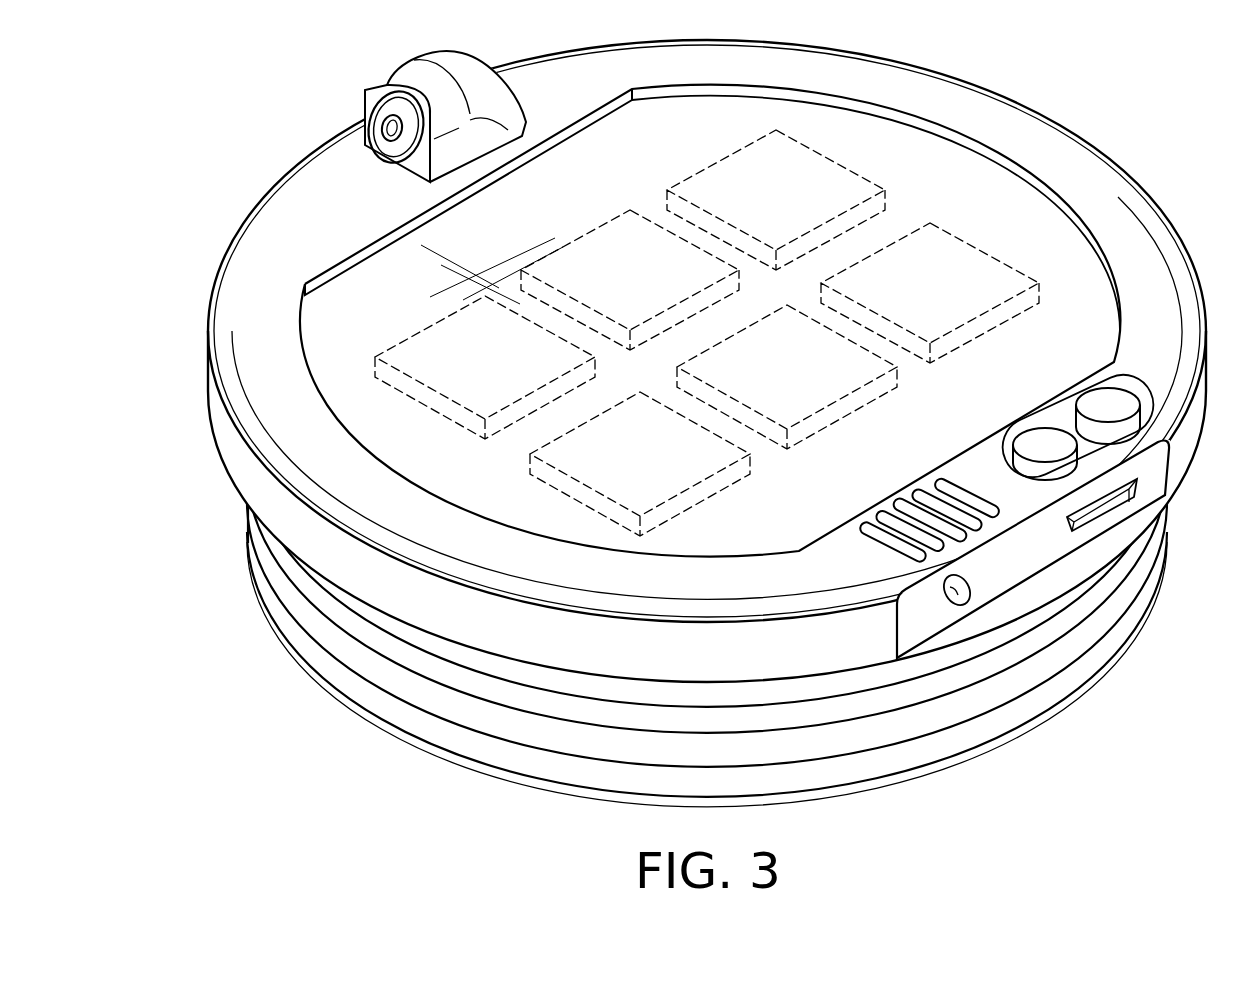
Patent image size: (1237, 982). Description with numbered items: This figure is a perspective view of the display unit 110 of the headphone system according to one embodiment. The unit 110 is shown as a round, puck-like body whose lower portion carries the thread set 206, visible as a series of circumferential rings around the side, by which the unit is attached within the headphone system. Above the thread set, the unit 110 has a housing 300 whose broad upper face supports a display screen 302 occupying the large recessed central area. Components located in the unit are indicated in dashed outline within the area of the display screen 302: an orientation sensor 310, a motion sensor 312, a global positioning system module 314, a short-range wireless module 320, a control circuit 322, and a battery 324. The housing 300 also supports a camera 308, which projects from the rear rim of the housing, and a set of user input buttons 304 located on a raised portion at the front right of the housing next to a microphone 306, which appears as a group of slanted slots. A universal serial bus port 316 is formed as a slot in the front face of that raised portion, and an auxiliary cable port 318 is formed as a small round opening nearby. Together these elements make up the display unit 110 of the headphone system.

The unit 110 is at (229, 133).
The thread set 206 is at (487, 665).
The housing 300 is at (1060, 155).
The display screen 302 is at (790, 125).
The set of user input buttons 304 is at (1103, 405).
The microphone 306 is at (880, 515).
The camera 308 is at (370, 90).
The orientation sensor 310 is at (640, 464).
The motion sensor 312 is at (787, 377).
The global positioning system (GPS) module 314 is at (930, 293).
The universal serial bus (USB) port 316 is at (1068, 526).
The auxiliary cable port 318 is at (962, 587).
The short-range wireless module 320 is at (485, 367).
The control circuit 322 is at (630, 280).
The battery 324 is at (776, 200).